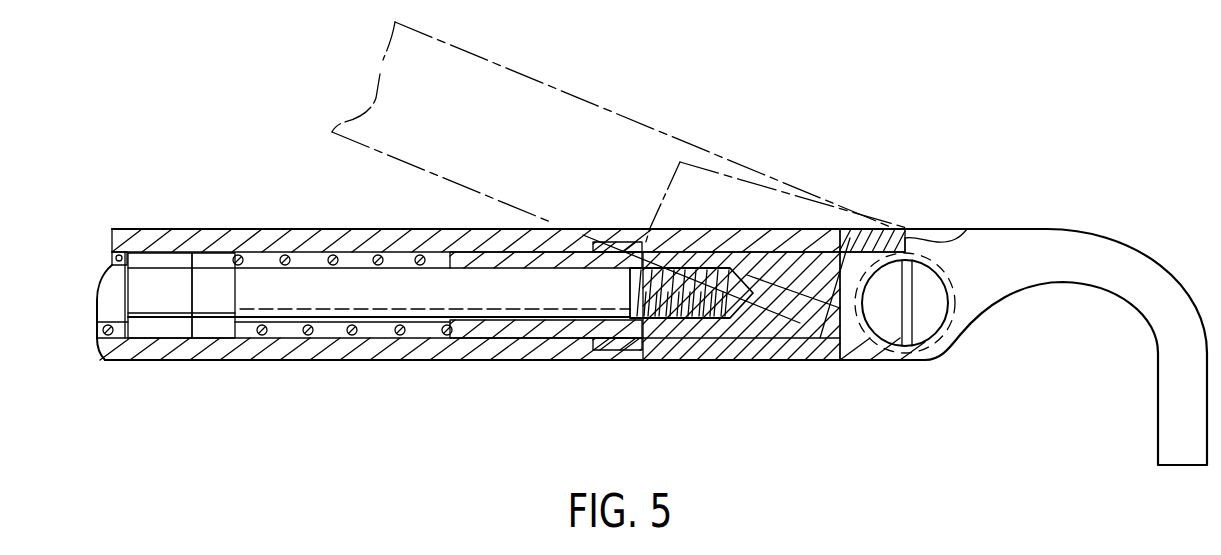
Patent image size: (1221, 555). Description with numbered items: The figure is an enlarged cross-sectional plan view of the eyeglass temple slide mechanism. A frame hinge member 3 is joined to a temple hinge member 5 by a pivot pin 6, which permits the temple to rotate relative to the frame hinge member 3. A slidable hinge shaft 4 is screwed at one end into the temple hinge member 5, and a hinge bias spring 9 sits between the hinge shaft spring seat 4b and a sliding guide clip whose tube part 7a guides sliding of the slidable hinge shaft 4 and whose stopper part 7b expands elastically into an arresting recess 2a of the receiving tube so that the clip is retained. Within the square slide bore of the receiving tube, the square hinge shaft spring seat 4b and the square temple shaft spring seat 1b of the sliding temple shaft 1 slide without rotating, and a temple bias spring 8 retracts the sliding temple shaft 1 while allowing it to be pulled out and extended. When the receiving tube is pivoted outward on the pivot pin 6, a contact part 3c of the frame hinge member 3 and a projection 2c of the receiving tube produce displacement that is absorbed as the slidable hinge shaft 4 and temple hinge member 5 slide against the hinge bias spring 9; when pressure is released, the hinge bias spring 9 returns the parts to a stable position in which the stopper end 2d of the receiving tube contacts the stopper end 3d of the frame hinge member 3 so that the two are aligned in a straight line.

The sliding temple shaft 1 is at (116, 302).
The temple shaft spring seat 1b is at (162, 297).
The arresting recess 2a is at (605, 345).
The projection 2c is at (875, 245).
The stopper end 2d is at (790, 350).
The frame hinge member 3 is at (1008, 290).
The contact part 3c is at (962, 235).
The stopper end 3d is at (843, 340).
The slidable hinge shaft 4 is at (435, 306).
The hinge shaft spring seat 4b is at (218, 297).
The temple hinge member 5 is at (736, 325).
The pivot pin 6 is at (927, 327).
The tube part 7a is at (536, 333).
The stopper part 7b is at (632, 242).
The temple bias spring 8 is at (112, 258).
The hinge bias spring 9 is at (378, 256).